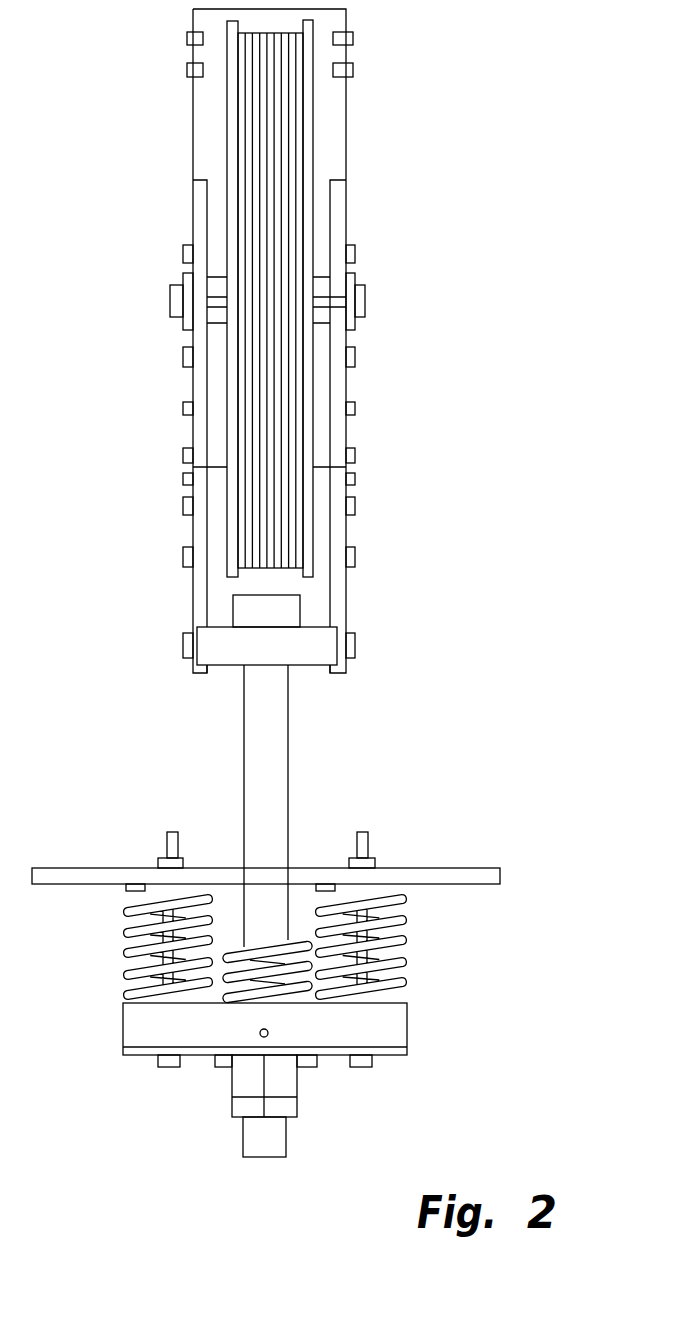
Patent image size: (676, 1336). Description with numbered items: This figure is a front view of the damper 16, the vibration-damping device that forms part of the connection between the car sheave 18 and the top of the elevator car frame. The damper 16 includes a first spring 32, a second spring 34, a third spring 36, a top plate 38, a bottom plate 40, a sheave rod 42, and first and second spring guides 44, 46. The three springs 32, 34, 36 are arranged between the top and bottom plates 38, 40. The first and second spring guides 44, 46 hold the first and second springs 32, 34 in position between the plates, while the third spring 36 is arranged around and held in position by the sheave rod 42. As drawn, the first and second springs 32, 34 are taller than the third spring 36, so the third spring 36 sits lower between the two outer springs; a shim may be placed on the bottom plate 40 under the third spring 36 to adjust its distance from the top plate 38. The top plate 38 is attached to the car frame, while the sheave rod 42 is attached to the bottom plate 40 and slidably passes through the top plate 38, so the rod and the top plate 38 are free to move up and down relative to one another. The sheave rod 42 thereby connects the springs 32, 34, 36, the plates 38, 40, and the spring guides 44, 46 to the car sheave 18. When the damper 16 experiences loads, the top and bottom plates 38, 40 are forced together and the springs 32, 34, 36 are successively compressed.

The damper 16 is at (313, 583).
The car sheave 18 is at (313, 103).
The first spring 32 is at (123, 935).
The second spring 34 is at (407, 925).
The third spring 36 is at (238, 947).
The top plate 38 is at (488, 867).
The bottom plate 40 is at (135, 1055).
The sheave rod 42 is at (288, 733).
The first spring guide 44 is at (172, 832).
The second spring guide 46 is at (362, 830).